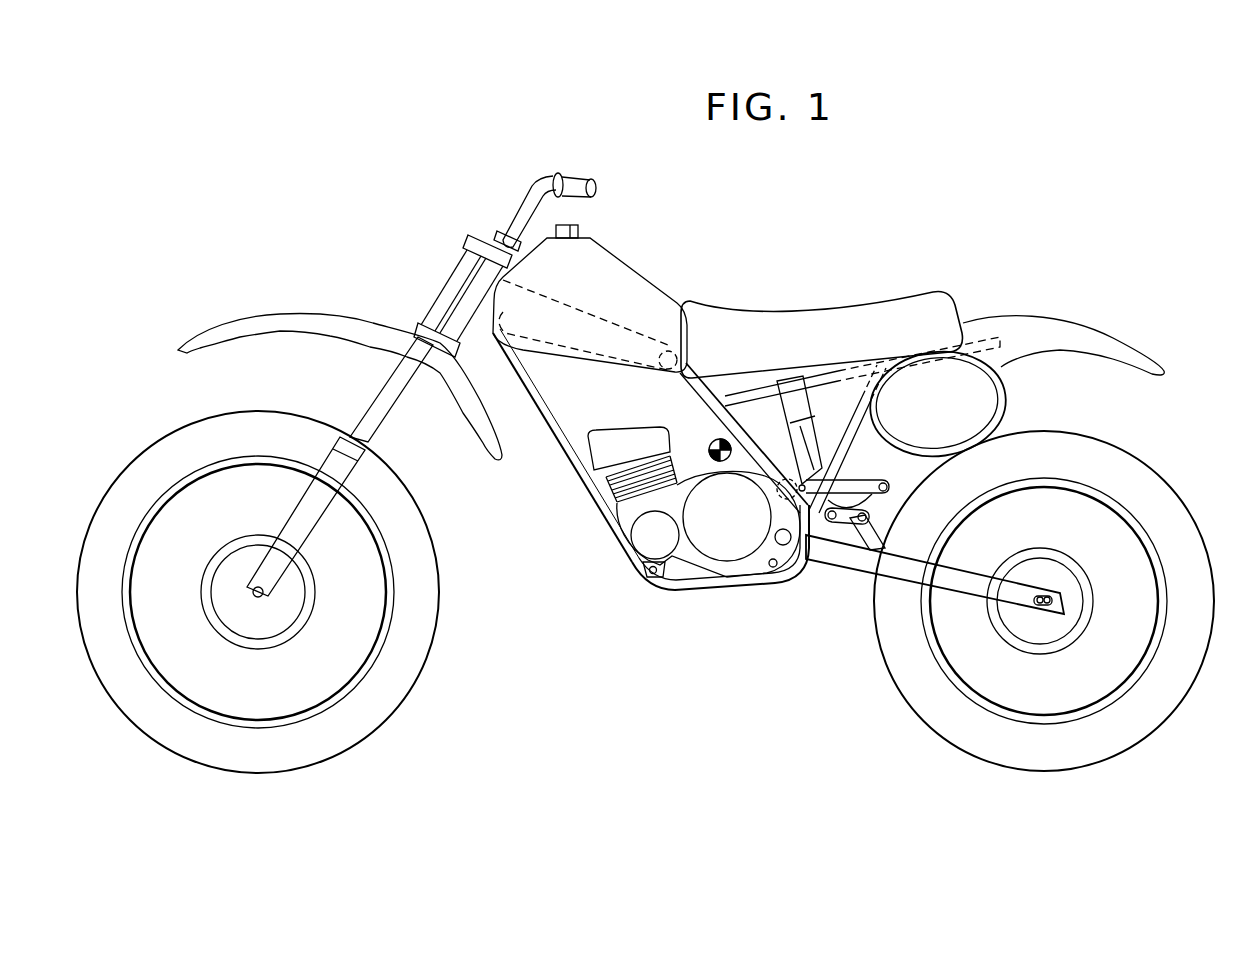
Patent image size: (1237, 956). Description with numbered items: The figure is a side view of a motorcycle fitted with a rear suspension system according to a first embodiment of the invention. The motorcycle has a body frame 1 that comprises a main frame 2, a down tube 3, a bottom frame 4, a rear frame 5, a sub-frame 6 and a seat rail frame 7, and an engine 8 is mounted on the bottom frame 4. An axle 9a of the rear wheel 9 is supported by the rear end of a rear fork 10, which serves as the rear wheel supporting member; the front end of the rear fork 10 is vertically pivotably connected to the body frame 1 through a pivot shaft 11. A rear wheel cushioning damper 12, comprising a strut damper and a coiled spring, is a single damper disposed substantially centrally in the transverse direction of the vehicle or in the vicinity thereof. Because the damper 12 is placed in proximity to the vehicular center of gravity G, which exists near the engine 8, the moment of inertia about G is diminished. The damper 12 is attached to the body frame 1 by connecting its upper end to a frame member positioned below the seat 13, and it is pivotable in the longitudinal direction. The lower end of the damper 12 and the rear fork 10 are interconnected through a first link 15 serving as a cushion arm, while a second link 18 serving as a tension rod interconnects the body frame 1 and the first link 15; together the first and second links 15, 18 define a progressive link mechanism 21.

The body frame 1 is at (593, 530).
The main frame 2 is at (580, 310).
The down tube 3 is at (545, 448).
The bottom frame 4 is at (727, 578).
The rear frame 5 is at (712, 393).
The sub-frame 6 is at (873, 400).
The seat rail frame 7 is at (863, 377).
The engine 8 is at (687, 548).
The rear wheel 9 is at (1093, 750).
The axle 9a is at (1056, 596).
The rear fork 10 is at (910, 572).
The pivot shaft 11 is at (785, 546).
The rear wheel cushioning damper 12 is at (803, 415).
The seat 13 is at (773, 312).
The first link 15 is at (887, 500).
The second link 18 is at (867, 483).
The progressive link mechanism 21 is at (834, 528).
The center of gravity G is at (712, 444).